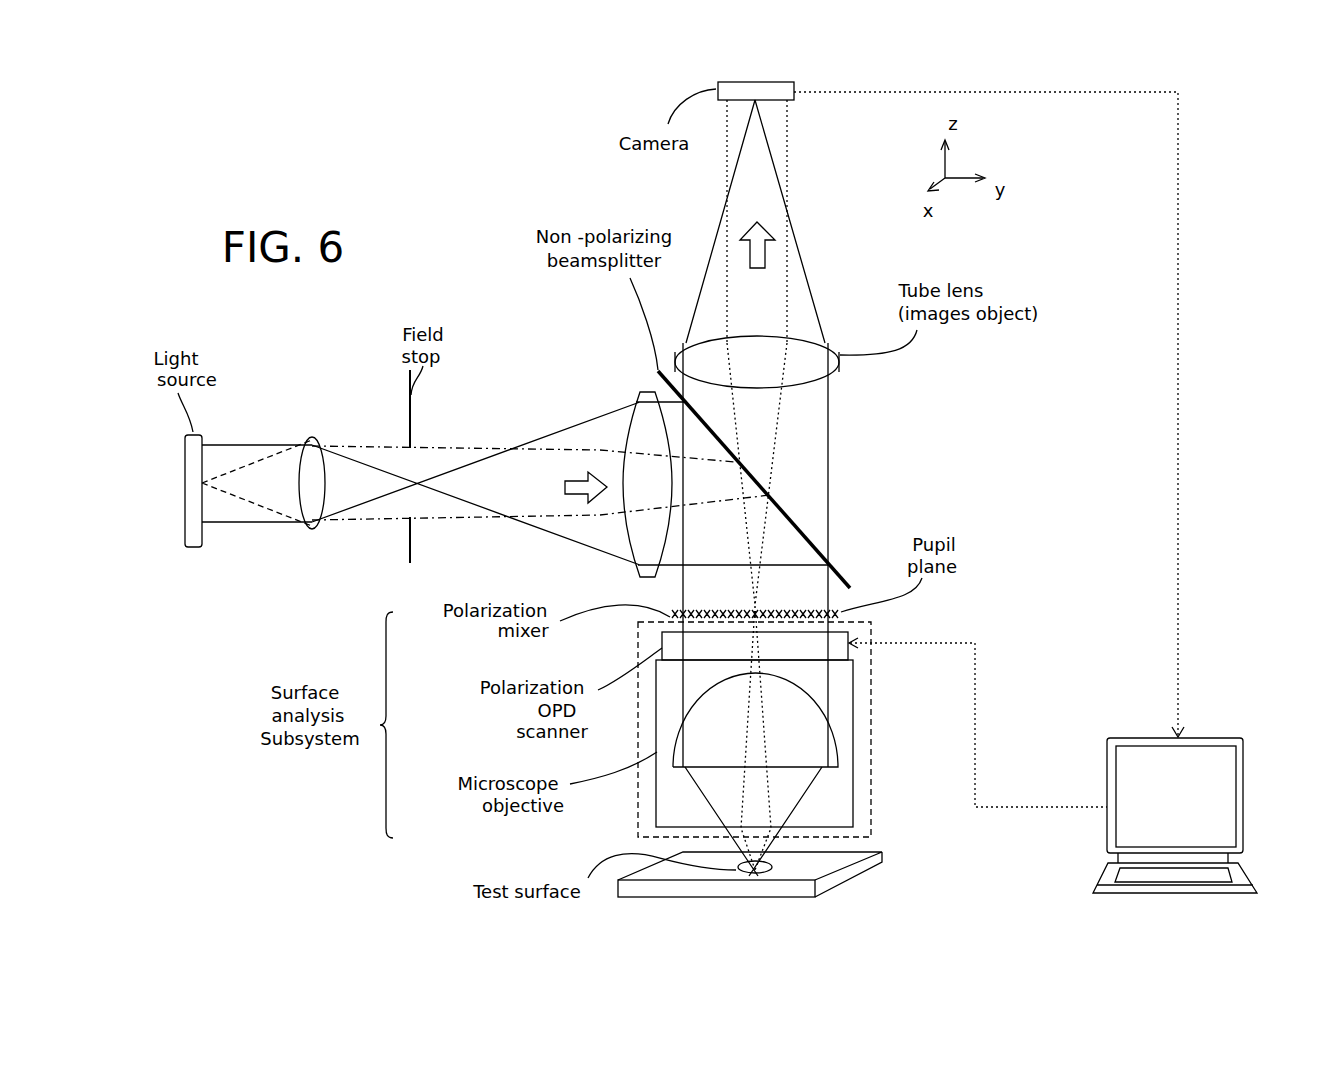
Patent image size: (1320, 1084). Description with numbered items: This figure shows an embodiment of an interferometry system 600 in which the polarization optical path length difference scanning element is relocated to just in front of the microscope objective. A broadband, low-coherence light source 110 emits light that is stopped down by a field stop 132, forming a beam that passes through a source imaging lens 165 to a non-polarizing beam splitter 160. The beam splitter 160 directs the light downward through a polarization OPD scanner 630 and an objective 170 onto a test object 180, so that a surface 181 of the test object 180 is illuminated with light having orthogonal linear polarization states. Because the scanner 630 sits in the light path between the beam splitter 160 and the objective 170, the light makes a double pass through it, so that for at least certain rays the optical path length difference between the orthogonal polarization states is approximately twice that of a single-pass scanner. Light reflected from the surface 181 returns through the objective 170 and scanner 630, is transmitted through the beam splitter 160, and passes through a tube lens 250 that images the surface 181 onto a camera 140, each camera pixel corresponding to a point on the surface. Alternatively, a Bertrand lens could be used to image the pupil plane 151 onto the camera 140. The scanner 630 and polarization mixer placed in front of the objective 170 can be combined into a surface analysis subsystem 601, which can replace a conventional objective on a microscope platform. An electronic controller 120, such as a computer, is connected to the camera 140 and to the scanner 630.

The camera 140 is at (765, 82).
The light source 110 is at (193, 548).
The field stop 132 is at (411, 432).
The source imaging lens 165 is at (643, 396).
The tube lens 250 is at (841, 366).
The beam splitter 160 is at (853, 582).
The pupil plane 151 is at (670, 613).
The polarization OPD scanner 630 is at (850, 632).
The surface analysis subsystem 601 is at (871, 732).
The objective 170 is at (853, 805).
The test object 180 is at (701, 892).
The test surface 181 is at (806, 872).
The electronic controller 120 is at (1153, 798).
The system 600 is at (425, 878).